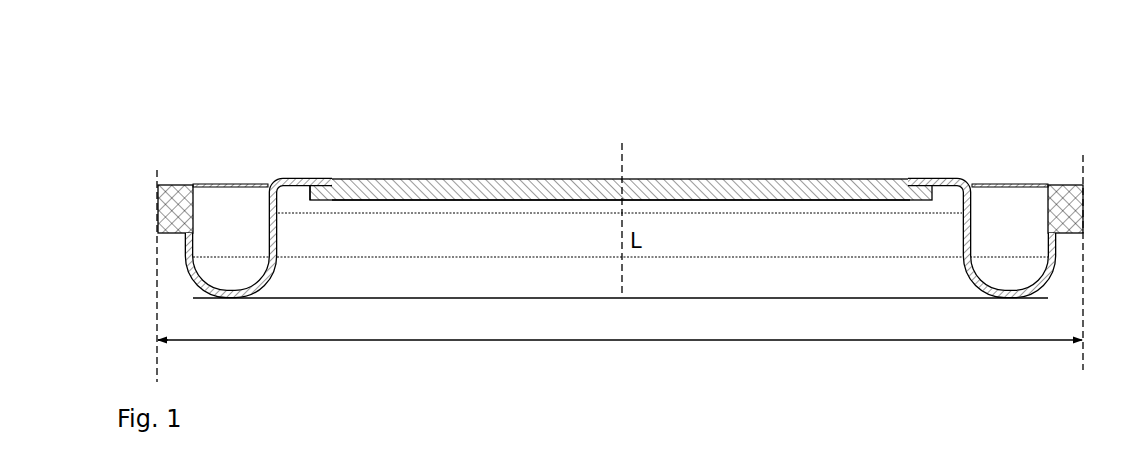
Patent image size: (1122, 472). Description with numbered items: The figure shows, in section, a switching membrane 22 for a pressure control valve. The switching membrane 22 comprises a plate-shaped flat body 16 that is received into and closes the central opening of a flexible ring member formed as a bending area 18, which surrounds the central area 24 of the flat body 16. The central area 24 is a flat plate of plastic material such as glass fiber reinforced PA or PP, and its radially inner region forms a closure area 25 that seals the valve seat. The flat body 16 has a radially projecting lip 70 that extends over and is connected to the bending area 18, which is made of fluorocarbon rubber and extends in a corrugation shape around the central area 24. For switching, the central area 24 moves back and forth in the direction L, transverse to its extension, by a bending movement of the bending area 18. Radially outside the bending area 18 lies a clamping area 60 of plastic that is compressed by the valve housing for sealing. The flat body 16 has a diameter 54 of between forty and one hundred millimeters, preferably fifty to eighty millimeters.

The plate-shaped flat body 16 is at (322, 178).
The bending area 18 is at (263, 296).
The switching membrane 22 is at (425, 130).
The central area 24 is at (686, 178).
The radial inner closure area 25 is at (665, 201).
The diameter 54 is at (762, 342).
The clamping area 60 is at (170, 185).
The radially projecting lip 70 is at (312, 195).